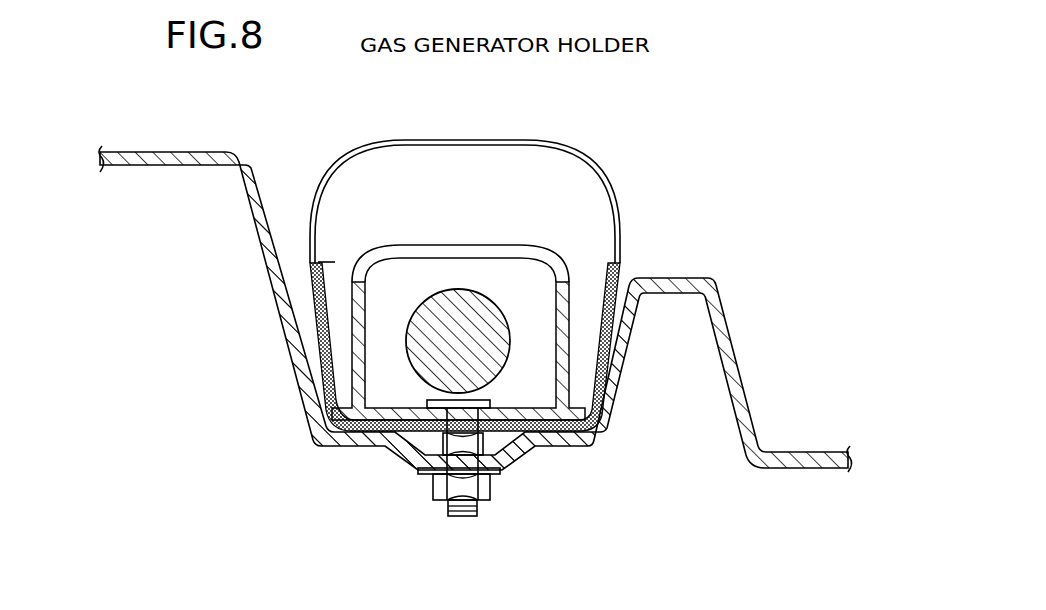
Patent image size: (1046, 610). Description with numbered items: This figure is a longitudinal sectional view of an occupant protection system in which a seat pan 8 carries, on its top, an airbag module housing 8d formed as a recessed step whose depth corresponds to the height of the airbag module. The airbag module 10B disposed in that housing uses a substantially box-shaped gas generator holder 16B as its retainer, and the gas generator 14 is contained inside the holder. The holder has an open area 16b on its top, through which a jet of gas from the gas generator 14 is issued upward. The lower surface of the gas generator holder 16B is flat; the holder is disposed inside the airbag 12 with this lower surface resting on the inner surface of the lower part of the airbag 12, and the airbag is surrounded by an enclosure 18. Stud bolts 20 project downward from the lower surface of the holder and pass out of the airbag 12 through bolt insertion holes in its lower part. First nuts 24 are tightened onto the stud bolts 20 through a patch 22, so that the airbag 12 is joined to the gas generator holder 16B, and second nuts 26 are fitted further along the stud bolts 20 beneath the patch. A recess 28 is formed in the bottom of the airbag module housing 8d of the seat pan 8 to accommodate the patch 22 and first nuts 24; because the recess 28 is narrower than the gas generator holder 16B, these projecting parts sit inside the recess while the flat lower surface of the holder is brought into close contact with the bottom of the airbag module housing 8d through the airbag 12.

The seat pan 8 is at (446, 364).
The airbag module housing 8d is at (334, 323).
The airbag module 10B is at (566, 313).
The airbag 12 is at (632, 262).
The gas generator 14 is at (497, 335).
The gas generator holder 16B is at (458, 252).
The open area 16b is at (528, 252).
The enclosure 18 is at (582, 248).
The stud bolt 20 is at (452, 515).
The patch 22 is at (505, 452).
The first nut 24 is at (505, 478).
The second nut 26 is at (500, 505).
The recess 28 is at (375, 463).